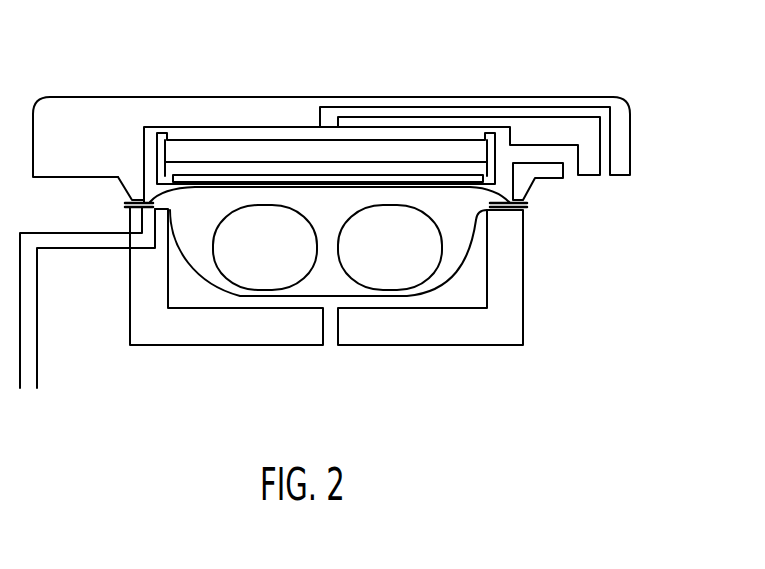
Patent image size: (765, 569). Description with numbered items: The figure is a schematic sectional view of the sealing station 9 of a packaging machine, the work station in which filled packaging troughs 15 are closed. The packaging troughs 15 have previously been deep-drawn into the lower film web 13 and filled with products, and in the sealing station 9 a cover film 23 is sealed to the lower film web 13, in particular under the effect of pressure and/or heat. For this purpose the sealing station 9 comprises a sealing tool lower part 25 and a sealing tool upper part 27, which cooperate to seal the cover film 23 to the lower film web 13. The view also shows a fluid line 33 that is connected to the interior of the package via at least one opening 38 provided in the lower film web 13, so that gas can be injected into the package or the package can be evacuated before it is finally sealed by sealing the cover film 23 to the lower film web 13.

The sealing station 9 is at (325, 206).
The sealing tool upper part 27 is at (268, 86).
The cover film 23 is at (513, 163).
The opening 38 is at (148, 209).
The fluid line 33 is at (150, 233).
The lower film web 13 is at (328, 308).
The packaging trough 15 is at (265, 296).
The sealing tool lower part 25 is at (428, 333).